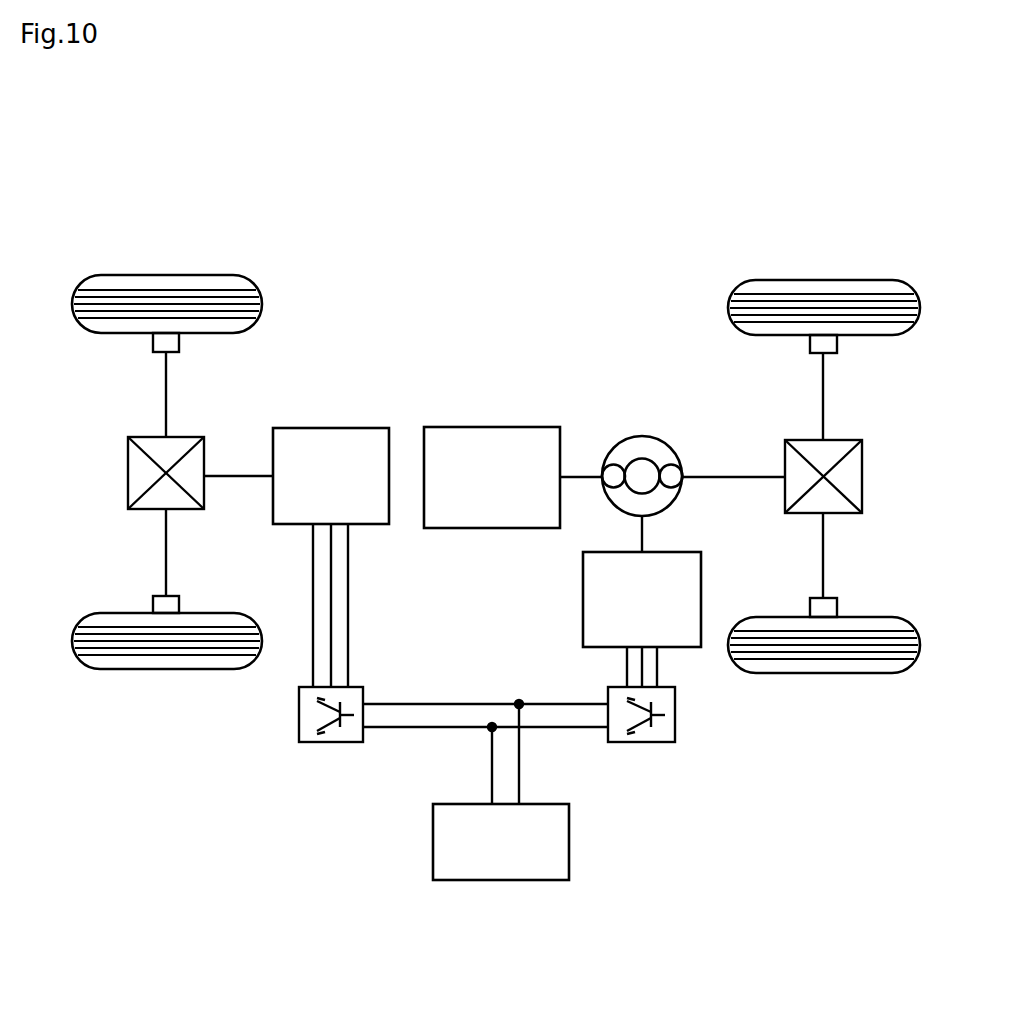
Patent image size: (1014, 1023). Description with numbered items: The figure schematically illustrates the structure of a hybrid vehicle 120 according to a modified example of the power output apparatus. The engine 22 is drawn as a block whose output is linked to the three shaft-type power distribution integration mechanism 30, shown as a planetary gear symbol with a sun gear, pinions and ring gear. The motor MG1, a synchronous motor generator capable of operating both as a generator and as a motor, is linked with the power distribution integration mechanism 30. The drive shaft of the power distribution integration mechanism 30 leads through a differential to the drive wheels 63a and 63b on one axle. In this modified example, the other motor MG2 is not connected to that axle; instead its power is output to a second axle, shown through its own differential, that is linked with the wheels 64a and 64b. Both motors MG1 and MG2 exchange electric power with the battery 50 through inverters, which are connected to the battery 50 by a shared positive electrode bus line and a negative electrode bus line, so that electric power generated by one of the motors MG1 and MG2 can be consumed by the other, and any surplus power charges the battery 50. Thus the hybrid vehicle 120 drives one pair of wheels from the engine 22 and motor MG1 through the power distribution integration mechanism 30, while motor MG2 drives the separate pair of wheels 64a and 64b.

The hybrid vehicle 120 is at (522, 258).
The engine 22 is at (492, 427).
The power distribution integration mechanism 30 is at (642, 436).
The battery 50 is at (569, 842).
The drive wheel 63a is at (824, 280).
The drive wheel 63b is at (824, 673).
The wheel 64a is at (166, 275).
The wheel 64b is at (166, 669).
The motor MG1 is at (583, 598).
The motor MG2 is at (330, 428).